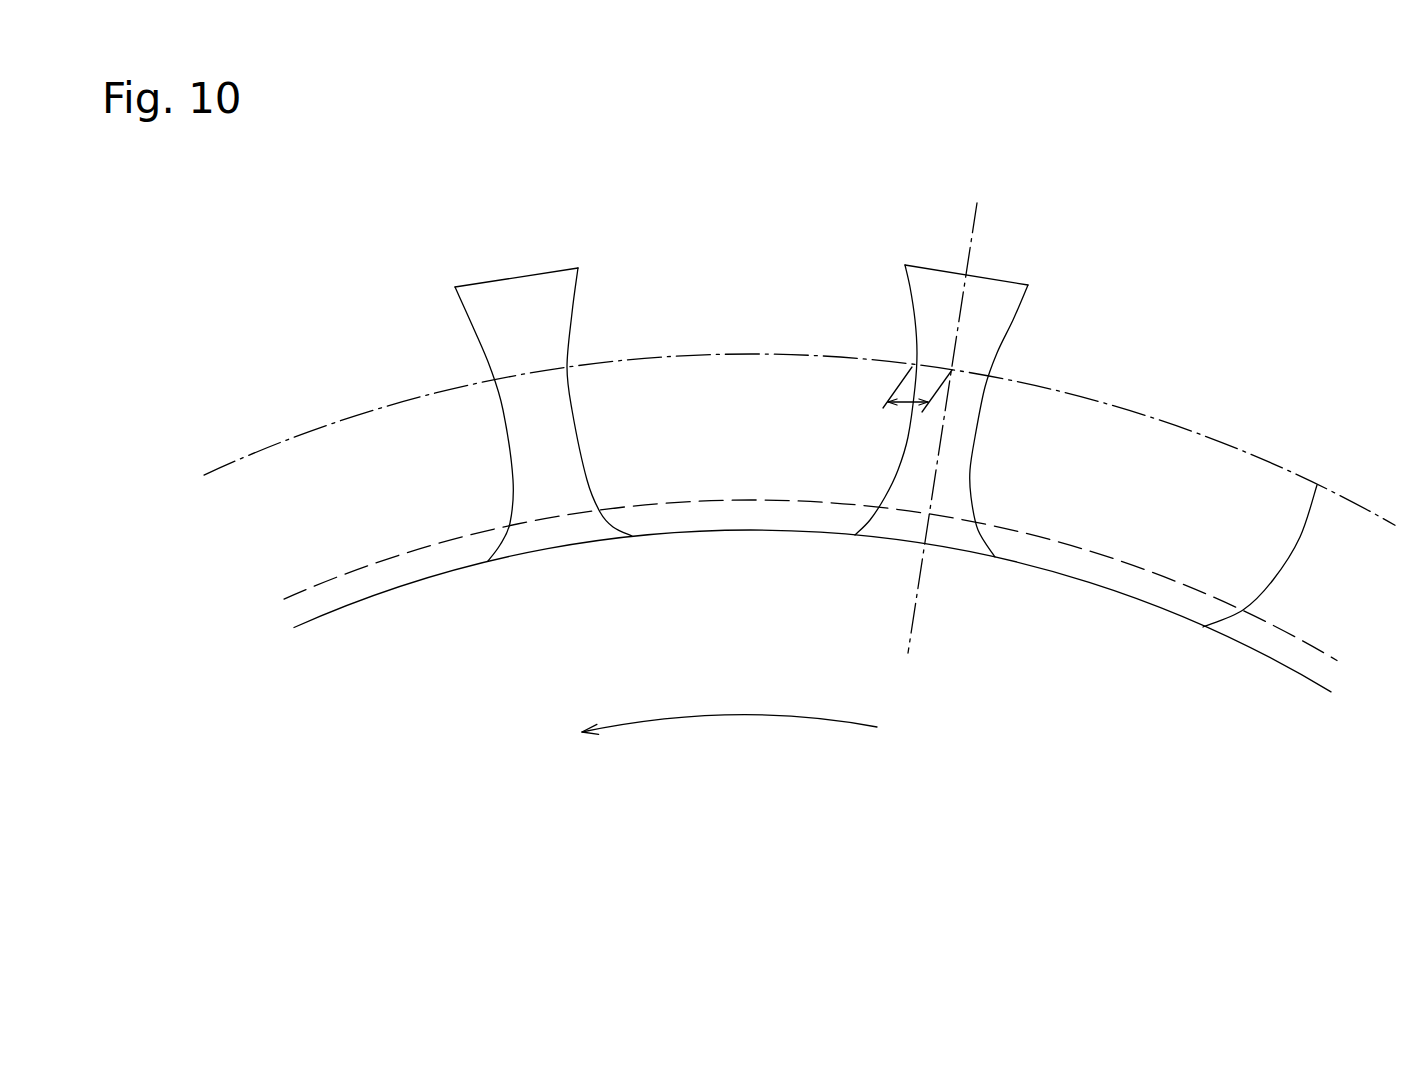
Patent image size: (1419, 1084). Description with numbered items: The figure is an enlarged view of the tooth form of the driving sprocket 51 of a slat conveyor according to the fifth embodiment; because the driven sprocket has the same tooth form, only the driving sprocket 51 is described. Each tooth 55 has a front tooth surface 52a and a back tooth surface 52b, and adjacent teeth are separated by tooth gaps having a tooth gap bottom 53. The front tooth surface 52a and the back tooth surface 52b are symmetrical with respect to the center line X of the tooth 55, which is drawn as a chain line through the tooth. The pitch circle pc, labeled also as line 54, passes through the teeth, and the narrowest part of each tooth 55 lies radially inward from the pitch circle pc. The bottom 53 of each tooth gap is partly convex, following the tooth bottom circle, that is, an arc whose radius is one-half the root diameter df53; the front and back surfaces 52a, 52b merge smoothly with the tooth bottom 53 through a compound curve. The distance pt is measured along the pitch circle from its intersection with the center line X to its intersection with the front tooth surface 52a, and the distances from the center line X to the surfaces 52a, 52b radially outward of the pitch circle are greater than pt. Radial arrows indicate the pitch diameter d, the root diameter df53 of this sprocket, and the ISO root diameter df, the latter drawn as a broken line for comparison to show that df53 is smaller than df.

The driving sprocket 51 is at (788, 673).
The front tooth surface 52a is at (473, 328).
The back tooth surface 52b is at (573, 312).
The tooth gap bottom 53 is at (441, 582).
The pitch circle 54 is at (727, 395).
The tooth 55 is at (518, 275).
The center line of the tooth X is at (946, 414).
The distance pt is at (905, 408).
The pitch circle pc is at (1233, 445).
The pitch diameter d is at (1157, 420).
The root diameter df53 is at (1197, 623).
The root diameter of the ISO tooth form df is at (1292, 636).